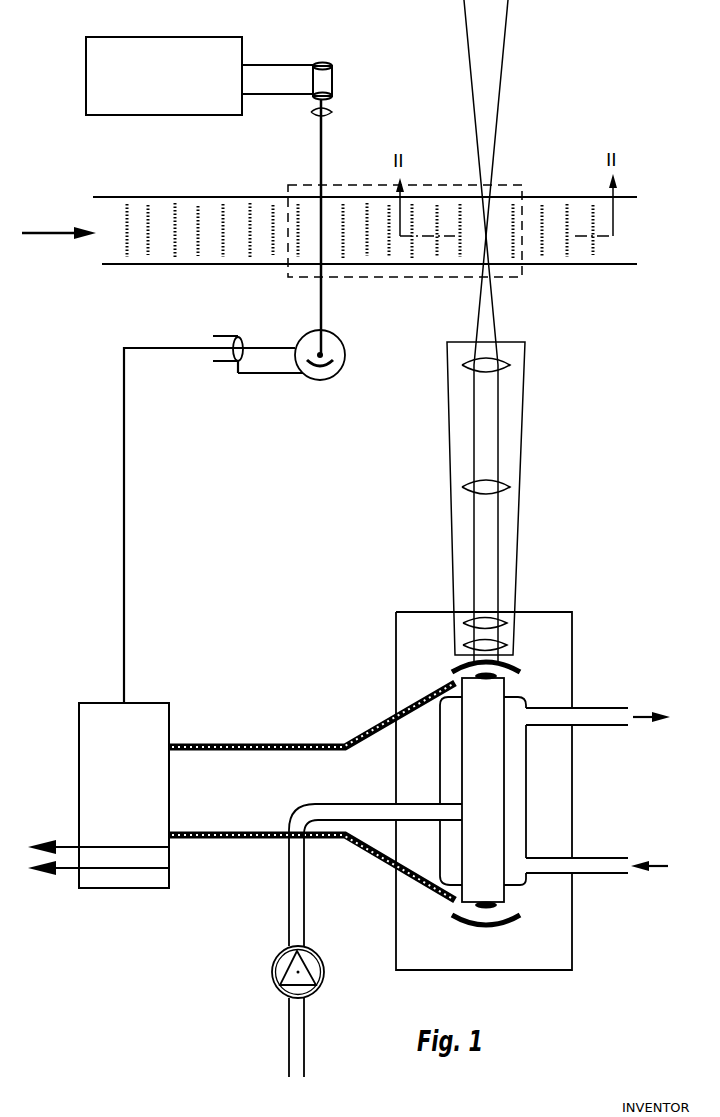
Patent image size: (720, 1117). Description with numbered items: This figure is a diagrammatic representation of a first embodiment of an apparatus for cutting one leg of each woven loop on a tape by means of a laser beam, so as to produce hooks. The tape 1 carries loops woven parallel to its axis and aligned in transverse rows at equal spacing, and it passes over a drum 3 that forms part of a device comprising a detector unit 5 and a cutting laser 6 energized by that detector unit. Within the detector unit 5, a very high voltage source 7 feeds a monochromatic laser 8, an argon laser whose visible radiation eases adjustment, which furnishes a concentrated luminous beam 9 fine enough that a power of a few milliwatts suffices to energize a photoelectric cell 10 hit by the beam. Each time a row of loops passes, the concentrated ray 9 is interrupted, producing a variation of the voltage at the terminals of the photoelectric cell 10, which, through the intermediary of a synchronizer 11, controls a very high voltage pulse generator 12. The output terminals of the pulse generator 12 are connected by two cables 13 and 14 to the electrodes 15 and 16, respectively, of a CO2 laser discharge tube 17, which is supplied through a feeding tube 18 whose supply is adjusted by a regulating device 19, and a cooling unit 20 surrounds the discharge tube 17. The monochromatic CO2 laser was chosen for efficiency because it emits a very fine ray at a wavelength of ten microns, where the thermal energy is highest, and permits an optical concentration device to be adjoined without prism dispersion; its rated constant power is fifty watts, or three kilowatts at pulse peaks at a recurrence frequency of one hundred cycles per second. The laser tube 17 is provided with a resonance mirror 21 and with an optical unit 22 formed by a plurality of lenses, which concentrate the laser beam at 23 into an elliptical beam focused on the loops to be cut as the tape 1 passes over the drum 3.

The tape 1 is at (133, 258).
The drum 3 is at (424, 277).
The detector unit 5 is at (290, 46).
The cutting laser 6 is at (556, 519).
The very high voltage source 7 is at (163, 58).
The monochromatic laser 8 is at (330, 62).
The concentrated luminous beam 9 is at (325, 140).
The photoelectric cell 10 is at (345, 352).
The synchronizer 11 is at (127, 505).
The very high voltage pulse generator 12 is at (150, 722).
The cable 13 is at (300, 744).
The cable 14 is at (238, 840).
The electrode 15 is at (508, 678).
The electrode 16 is at (500, 905).
The CO2 laser discharge tube 17 is at (493, 787).
The feeding tube 18 is at (298, 910).
The regulating device 19 is at (292, 972).
The cooling unit 20 is at (588, 718).
The resonance mirror 21 is at (453, 668).
The optical unit 22 is at (510, 438).
The concentration point of laser beam 23 is at (487, 237).